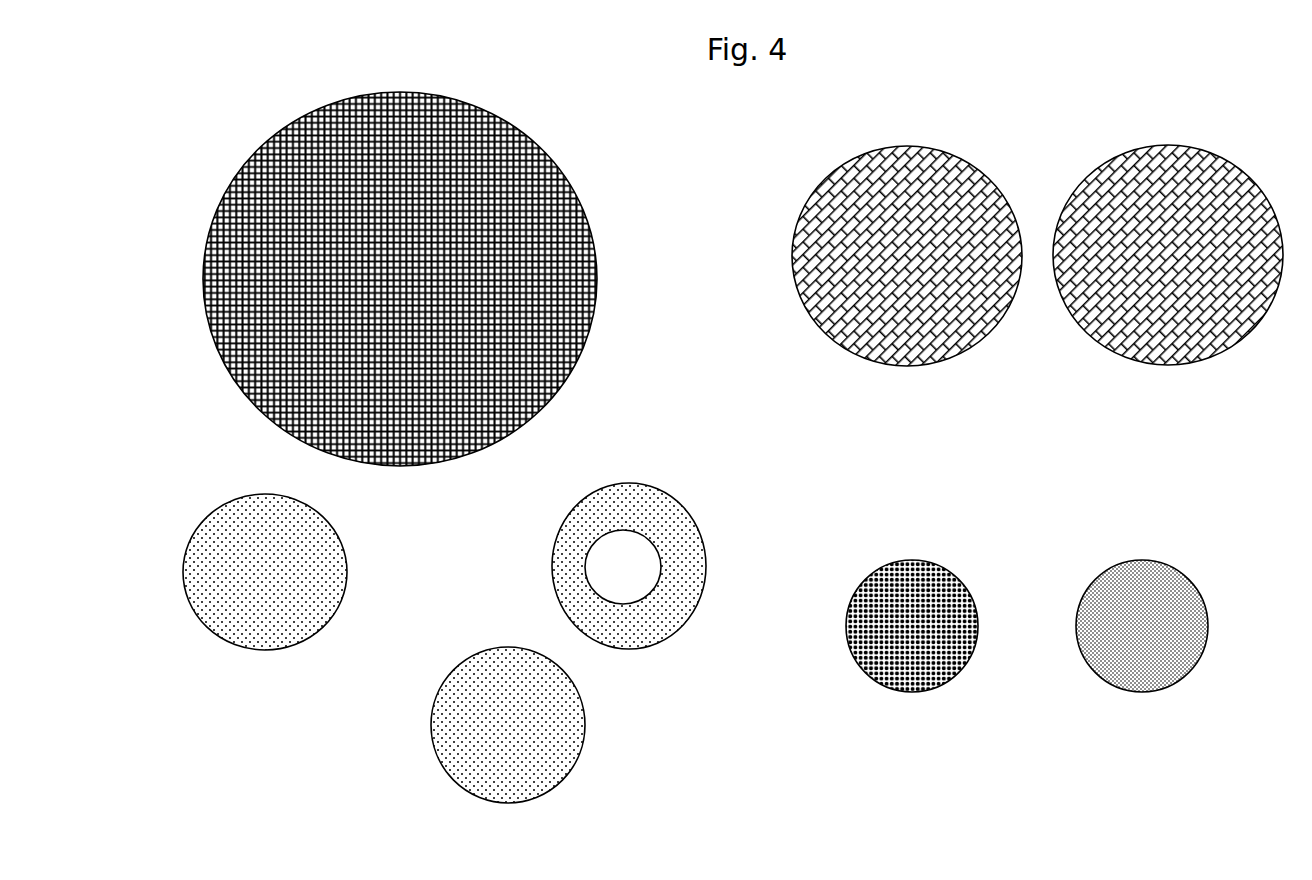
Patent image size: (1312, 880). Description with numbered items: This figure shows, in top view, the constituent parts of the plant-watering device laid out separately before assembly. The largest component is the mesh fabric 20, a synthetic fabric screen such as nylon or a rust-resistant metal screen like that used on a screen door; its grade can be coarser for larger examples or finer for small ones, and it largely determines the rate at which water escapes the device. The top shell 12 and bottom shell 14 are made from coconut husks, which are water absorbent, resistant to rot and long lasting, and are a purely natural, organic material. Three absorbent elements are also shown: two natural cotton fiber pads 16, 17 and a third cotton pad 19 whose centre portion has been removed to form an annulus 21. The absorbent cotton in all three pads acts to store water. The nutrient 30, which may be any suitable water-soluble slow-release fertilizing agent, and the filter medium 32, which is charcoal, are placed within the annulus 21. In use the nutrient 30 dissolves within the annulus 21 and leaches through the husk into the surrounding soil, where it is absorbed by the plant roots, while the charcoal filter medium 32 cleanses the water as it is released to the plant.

The mesh fabric 20 is at (550, 127).
The top shell 12 is at (943, 147).
The bottom shell 14 is at (1098, 355).
The cotton fiber pad 16 is at (317, 632).
The cotton fiber pad 17 is at (498, 637).
The cotton pad with centre portion removed 19 is at (672, 648).
The annulus 21 is at (617, 551).
The nutrient 30 is at (1098, 562).
The filter medium 32 is at (912, 703).